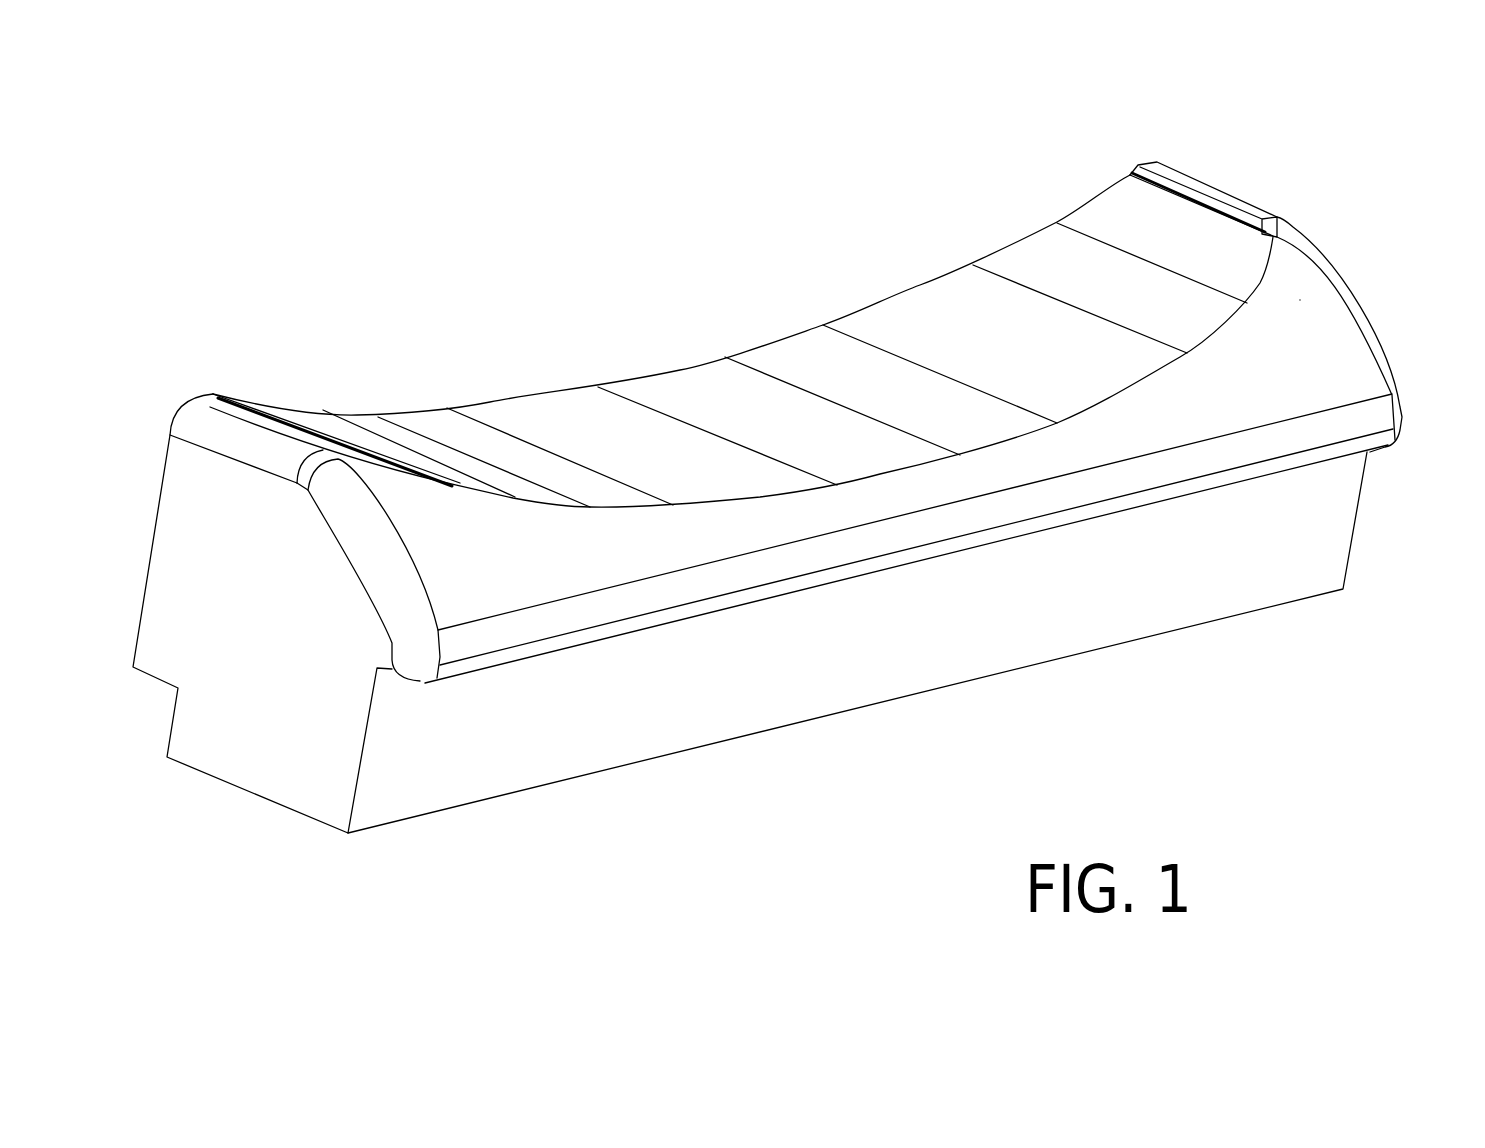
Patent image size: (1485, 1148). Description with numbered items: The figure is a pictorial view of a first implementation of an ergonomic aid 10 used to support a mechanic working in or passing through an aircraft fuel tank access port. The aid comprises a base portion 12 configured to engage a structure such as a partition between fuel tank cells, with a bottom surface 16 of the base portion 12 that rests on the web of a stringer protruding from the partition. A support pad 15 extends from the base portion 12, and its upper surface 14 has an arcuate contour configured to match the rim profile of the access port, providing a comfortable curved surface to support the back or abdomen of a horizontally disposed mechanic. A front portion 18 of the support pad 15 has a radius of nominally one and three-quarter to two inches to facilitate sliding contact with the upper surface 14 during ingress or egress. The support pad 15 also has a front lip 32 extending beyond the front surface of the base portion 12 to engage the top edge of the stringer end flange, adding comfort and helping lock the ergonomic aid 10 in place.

The ergonomic aid 10 is at (651, 263).
The base portion 12 is at (292, 702).
The upper surface 14 is at (948, 325).
The support pad 15 is at (1327, 247).
The bottom surface 16 is at (968, 672).
The front portion 18 is at (1318, 380).
The front lip 32 is at (595, 640).